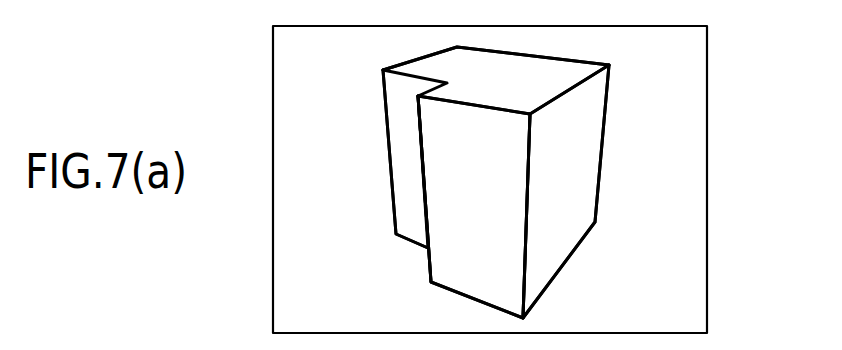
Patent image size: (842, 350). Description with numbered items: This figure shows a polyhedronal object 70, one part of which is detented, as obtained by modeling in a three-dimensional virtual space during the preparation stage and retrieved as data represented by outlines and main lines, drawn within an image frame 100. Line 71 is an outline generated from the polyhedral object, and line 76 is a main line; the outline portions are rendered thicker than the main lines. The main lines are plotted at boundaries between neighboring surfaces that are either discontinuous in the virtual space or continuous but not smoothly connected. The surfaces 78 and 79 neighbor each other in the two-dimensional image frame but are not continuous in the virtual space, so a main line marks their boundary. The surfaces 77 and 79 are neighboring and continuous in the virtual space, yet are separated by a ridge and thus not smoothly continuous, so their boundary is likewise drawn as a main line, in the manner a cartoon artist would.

The housing / display area 100 is at (683, 61).
The polyhedronal object 70 is at (614, 134).
The outline 71 is at (417, 56).
The surface 78 is at (400, 137).
The main line 76 is at (422, 162).
The surface 79 is at (467, 243).
The surface 77 is at (587, 193).